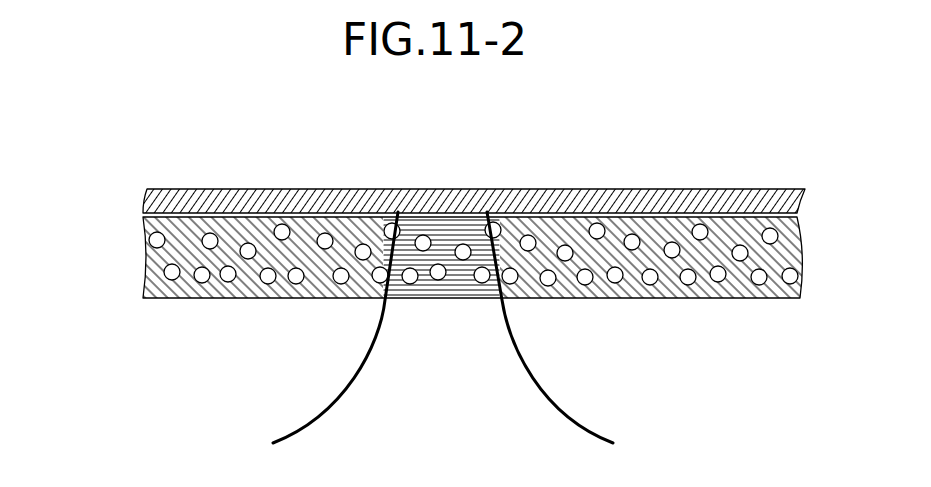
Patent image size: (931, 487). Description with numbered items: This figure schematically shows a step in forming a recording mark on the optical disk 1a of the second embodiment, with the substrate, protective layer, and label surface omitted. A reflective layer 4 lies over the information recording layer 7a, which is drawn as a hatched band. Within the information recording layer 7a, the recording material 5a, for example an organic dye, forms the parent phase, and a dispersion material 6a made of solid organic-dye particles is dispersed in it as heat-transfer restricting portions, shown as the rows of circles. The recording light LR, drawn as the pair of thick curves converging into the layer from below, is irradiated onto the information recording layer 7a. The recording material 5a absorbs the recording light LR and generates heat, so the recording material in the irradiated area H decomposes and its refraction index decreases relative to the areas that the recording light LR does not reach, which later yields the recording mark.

The optical disk 1a is at (155, 147).
The reflective layer 4 is at (146, 190).
The information recording layer 7a is at (412, 257).
The recording material 5a is at (143, 218).
The dispersion material 6a is at (163, 267).
The area irradiated with the recording light H is at (473, 225).
The recording light LR is at (513, 375).